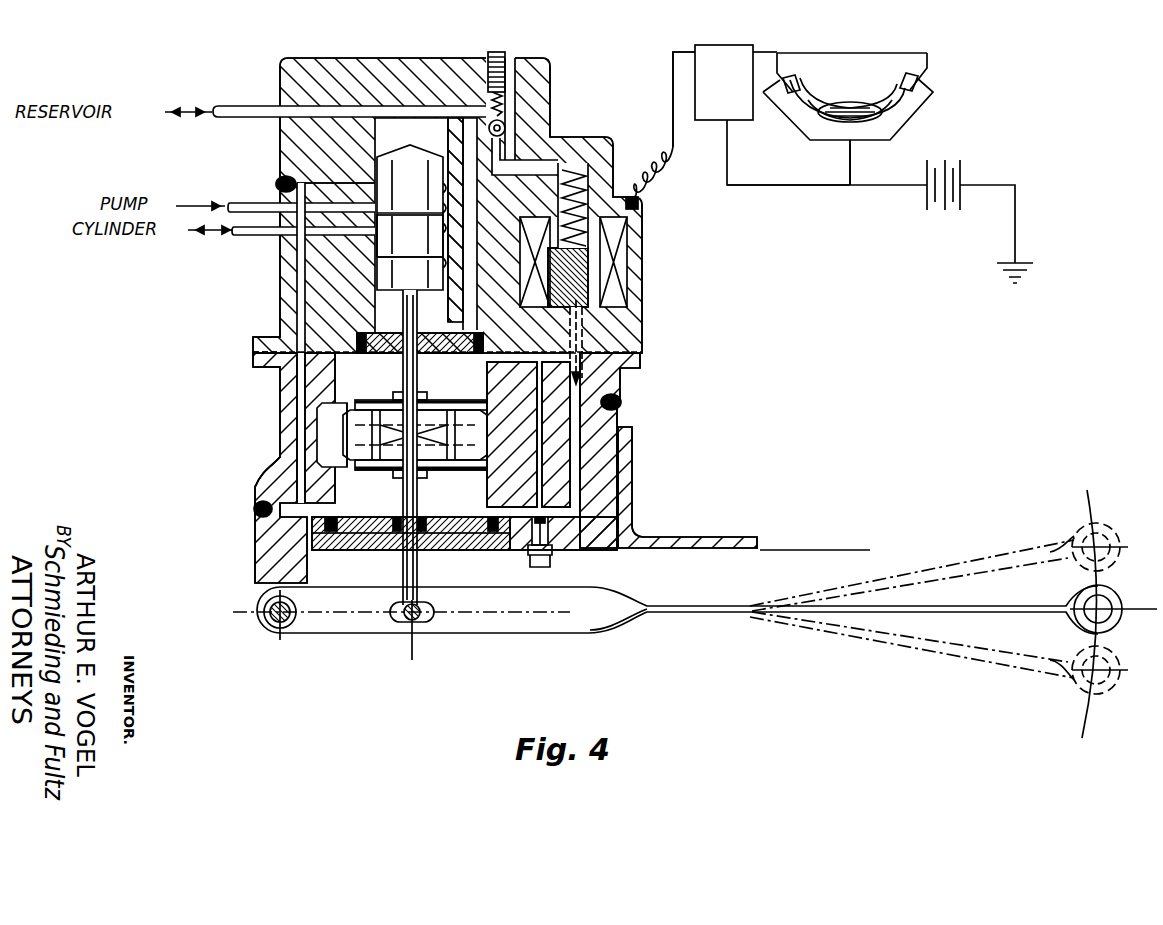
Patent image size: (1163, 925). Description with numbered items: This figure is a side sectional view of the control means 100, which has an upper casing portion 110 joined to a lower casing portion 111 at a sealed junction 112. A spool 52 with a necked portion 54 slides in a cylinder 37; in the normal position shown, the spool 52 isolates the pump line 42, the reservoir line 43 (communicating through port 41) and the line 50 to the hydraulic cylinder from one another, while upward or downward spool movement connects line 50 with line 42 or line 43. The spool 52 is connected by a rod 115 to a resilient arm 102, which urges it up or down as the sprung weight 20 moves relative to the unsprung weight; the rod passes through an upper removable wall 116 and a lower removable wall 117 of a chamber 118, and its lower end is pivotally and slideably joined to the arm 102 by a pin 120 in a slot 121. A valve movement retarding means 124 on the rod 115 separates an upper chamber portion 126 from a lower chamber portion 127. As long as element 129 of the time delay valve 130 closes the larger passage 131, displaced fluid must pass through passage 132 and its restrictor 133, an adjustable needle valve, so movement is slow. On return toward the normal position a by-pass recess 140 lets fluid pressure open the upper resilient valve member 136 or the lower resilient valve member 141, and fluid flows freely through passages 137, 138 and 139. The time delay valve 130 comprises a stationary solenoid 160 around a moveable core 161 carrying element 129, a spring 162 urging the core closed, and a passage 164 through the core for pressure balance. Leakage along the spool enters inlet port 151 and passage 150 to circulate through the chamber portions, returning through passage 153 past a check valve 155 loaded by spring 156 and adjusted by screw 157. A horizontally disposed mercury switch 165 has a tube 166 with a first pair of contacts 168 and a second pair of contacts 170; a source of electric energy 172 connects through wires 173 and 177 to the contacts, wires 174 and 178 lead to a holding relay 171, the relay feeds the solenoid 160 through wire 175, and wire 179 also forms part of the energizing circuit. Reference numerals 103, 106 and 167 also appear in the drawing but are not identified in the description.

The control means 100 is at (276, 62).
The upper casing portion 110 is at (280, 323).
The cylinder 37 is at (397, 122).
The port 41 is at (452, 300).
The line 43 is at (245, 118).
The line 42 is at (252, 205).
The line 50 is at (255, 237).
The inlet port 151 is at (340, 168).
The passage 150 is at (300, 278).
The screw 157 is at (505, 55).
The spring 156 is at (505, 92).
The check valve 155 is at (505, 125).
The return passage 153 is at (515, 160).
The time delay valve 130 is at (620, 273).
The stationary solenoid 160 is at (614, 226).
The moveable core 161 is at (588, 262).
The passage 164 is at (590, 298).
The spring 162 is at (616, 140).
The spool 52 is at (424, 177).
The necked portion 54 is at (424, 239).
The upper removable wall 116 is at (380, 352).
The lower casing portion 111 is at (253, 360).
The sealed junction 112 is at (253, 350).
The upper chamber portion 126 is at (300, 374).
The valve movement retarding means 124 is at (330, 488).
The lower chamber portion 127 is at (345, 495).
The recess 140 is at (325, 440).
The passage 138 is at (345, 427).
The passage 137 is at (380, 418).
The upper resilient valve member 136 is at (430, 402).
The passage 139 is at (360, 466).
The lower resilient valve member 141 is at (450, 472).
The rod 115 is at (417, 571).
The lower removable wall 117 is at (352, 545).
The chamber 118 is at (392, 548).
The restrictor 133 is at (545, 520).
The element 129 is at (590, 356).
The passage 131 is at (632, 430).
The passage 132 is at (600, 450).
The sprung weight 20 is at (685, 525).
The resilient arm 102 is at (480, 625).
The pivot pin 103 is at (292, 628).
The pin 120 is at (395, 622).
The slot 121 is at (425, 620).
The unsprung weight pivot 106 is at (1088, 602).
The holding relay 171 is at (742, 99).
The wire 175 is at (672, 95).
The wire 174 is at (795, 62).
The wire 178 is at (890, 53).
The mercury switch 165 is at (822, 90).
The tube 166 is at (870, 103).
The mercury 167 is at (855, 118).
The first pair of contacts 168 is at (790, 100).
The second pair of contacts 170 is at (925, 80).
The wire 173 is at (812, 142).
The wire 177 is at (885, 138).
The wire 179 is at (742, 186).
The source of electric energy 172 is at (940, 205).